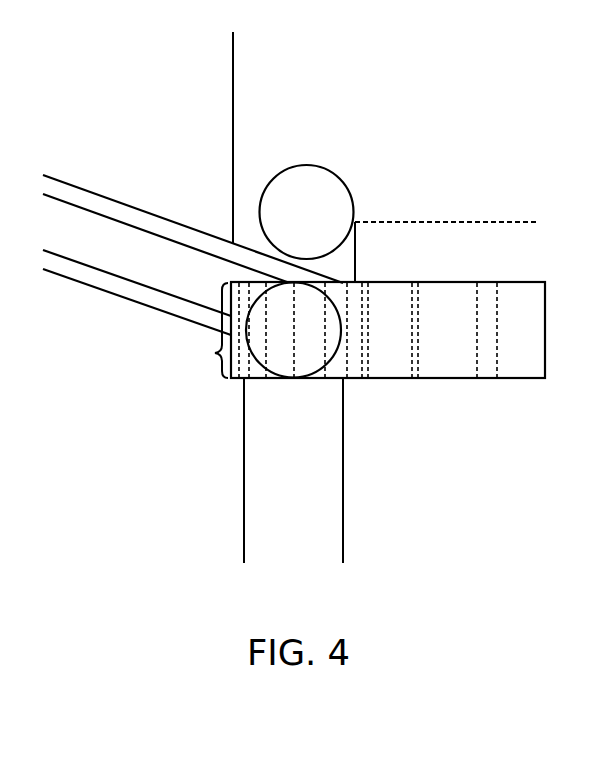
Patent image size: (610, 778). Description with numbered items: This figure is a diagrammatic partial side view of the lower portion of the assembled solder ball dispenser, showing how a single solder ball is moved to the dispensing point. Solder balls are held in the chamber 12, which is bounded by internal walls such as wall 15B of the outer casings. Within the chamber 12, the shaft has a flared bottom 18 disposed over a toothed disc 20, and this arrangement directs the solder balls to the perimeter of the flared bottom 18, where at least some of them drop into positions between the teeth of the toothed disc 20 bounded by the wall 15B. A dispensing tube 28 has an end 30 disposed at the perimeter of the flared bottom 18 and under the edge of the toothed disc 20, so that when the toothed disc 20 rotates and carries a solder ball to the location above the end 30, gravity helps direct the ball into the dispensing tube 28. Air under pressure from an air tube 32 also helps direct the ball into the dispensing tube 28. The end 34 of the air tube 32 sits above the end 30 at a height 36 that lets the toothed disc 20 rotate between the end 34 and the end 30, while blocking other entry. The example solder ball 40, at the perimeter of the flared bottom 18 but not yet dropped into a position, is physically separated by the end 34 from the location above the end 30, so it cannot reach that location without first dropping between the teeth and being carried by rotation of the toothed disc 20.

The internal wall 15B is at (233, 53).
The chamber 12 is at (280, 117).
The solder ball 40 is at (315, 166).
The flared bottom 18 is at (357, 230).
The toothed disc 20 is at (467, 282).
The air tube 32 is at (83, 284).
The height 36 is at (214, 353).
The end of air tube 34 is at (254, 380).
The end of dispensing tube 30 is at (344, 380).
The dispensing tube 28 is at (344, 512).